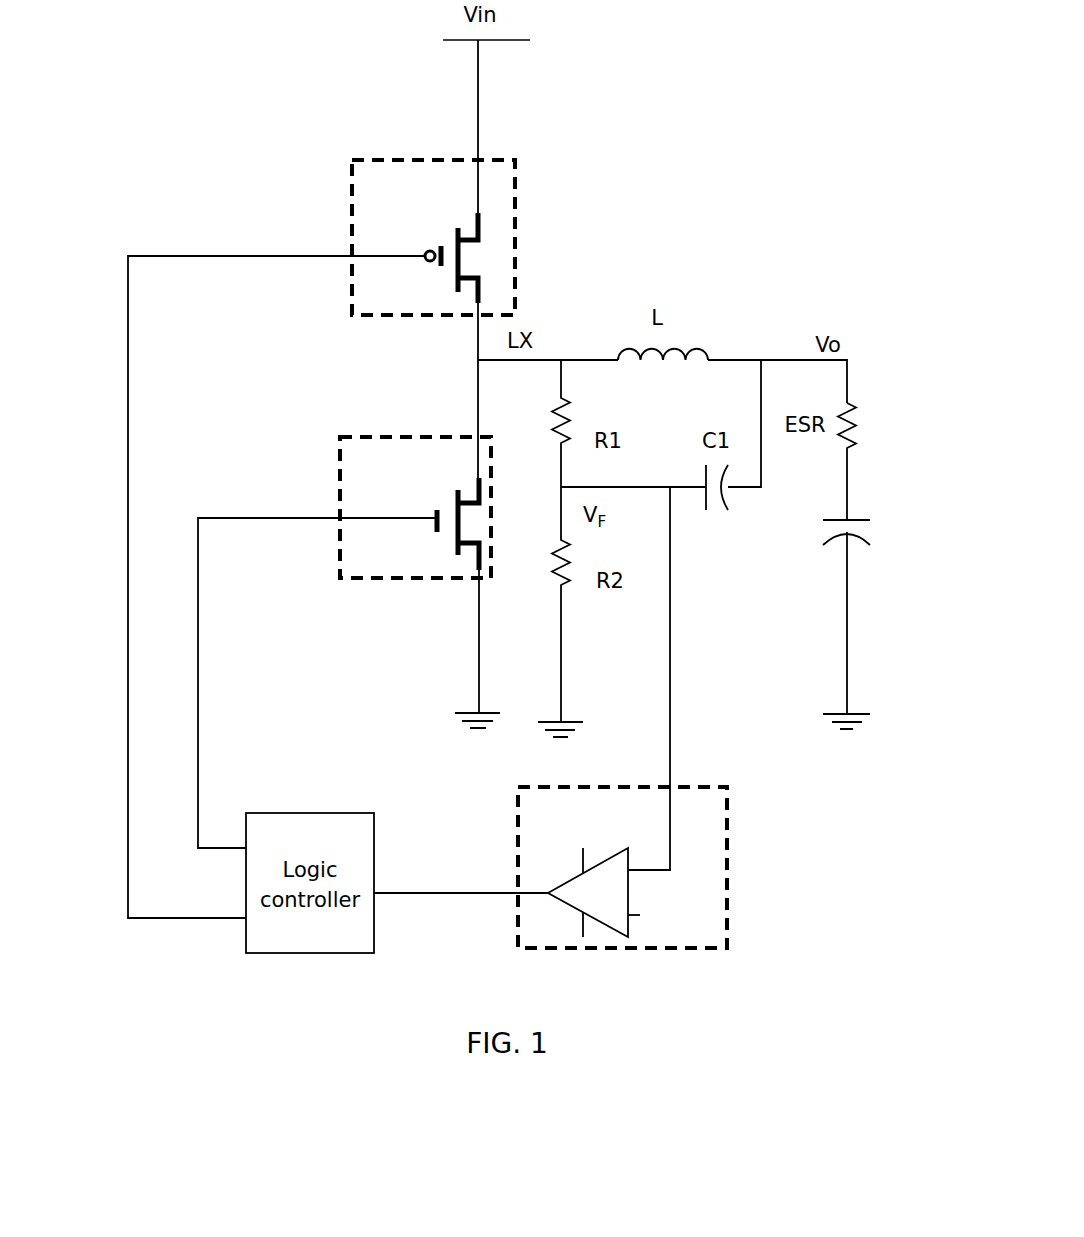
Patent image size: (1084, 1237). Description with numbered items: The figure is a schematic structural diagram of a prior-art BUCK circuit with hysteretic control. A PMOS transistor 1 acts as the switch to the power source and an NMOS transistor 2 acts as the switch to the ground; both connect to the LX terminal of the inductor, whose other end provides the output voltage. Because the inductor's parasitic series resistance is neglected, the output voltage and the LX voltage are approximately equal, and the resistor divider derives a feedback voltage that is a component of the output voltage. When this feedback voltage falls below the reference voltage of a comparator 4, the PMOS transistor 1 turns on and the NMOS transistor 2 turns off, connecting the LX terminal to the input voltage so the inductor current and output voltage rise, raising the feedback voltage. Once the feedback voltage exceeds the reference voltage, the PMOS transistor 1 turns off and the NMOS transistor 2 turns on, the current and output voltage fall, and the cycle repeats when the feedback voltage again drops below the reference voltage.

The PMOS transistor 1 is at (503, 214).
The NMOS transistor 2 is at (347, 570).
The comparator 4 is at (708, 848).